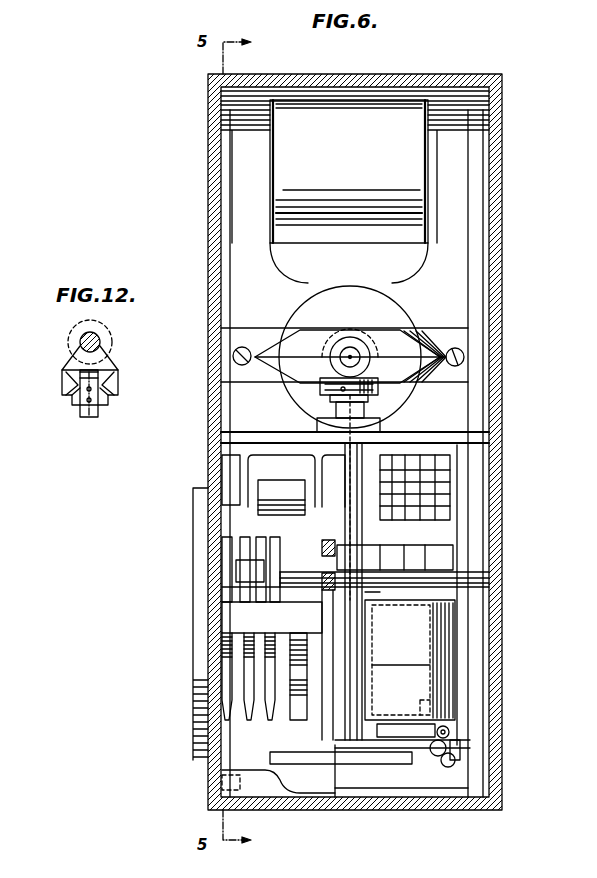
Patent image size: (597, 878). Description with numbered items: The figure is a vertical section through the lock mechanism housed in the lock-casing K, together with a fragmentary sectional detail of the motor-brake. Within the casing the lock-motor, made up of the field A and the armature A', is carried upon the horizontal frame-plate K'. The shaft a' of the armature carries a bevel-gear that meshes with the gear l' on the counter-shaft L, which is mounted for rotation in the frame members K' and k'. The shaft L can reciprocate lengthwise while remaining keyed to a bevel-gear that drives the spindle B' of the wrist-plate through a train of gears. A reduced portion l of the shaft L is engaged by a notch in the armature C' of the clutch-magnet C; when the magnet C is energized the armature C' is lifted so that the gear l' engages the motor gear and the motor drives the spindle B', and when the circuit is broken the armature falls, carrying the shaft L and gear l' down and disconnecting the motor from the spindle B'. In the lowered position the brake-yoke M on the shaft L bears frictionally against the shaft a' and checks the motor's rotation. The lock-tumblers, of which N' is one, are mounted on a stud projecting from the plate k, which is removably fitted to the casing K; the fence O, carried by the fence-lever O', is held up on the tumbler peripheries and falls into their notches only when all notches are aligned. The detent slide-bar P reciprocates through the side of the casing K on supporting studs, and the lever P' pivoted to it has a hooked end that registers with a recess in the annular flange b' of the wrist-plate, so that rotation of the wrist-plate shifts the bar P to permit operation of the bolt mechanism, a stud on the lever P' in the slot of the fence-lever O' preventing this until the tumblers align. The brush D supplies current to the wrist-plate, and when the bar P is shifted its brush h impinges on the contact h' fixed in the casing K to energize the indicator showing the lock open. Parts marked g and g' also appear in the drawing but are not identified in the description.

In FIG. 6, the lock-casing K is at (368, 442).
In FIG. 6, the horizontal frame-plate K' is at (355, 424).
In FIG. 6, the field A is at (349, 191).
In FIG. 6, the armature A' is at (350, 342).
In FIG. 6, the armature shaft a' is at (329, 362).
In FIG. 12, the armature shaft a' is at (73, 342).
In FIG. 6, the brake-yoke M is at (320, 388).
In FIG. 12, the brake-yoke M is at (68, 360).
In FIG. 6, the gear l' is at (363, 492).
In FIG. 12, the gear l' is at (109, 380).
In FIG. 6, the reduced portion of shaft l is at (341, 763).
In FIG. 6, the counter-shaft L is at (348, 622).
In FIG. 12, the counter-shaft L is at (89, 417).
In FIG. 6, the brush D is at (283, 485).
In FIG. 6, the detent slide-bar P is at (384, 590).
In FIG. 6, the lever P' is at (289, 590).
In FIG. 6, the fence O is at (248, 579).
In FIG. 6, the fence-lever O' is at (227, 554).
In FIG. 6, the lock-tumbler N' is at (228, 687).
In FIG. 6, the annular flange b' is at (298, 676).
In FIG. 6, the rod g is at (313, 666).
In FIG. 6, the bar g' is at (359, 749).
In FIG. 6, the clutch-magnet C is at (410, 660).
In FIG. 6, the armature of clutch-magnet C' is at (486, 750).
In FIG. 6, the brush h is at (381, 668).
In FIG. 6, the contact h' is at (380, 709).
In FIG. 6, the plate k is at (300, 624).
In FIG. 6, the frame member k' is at (401, 811).
In FIG. 6, the driving-spindle B' is at (326, 771).